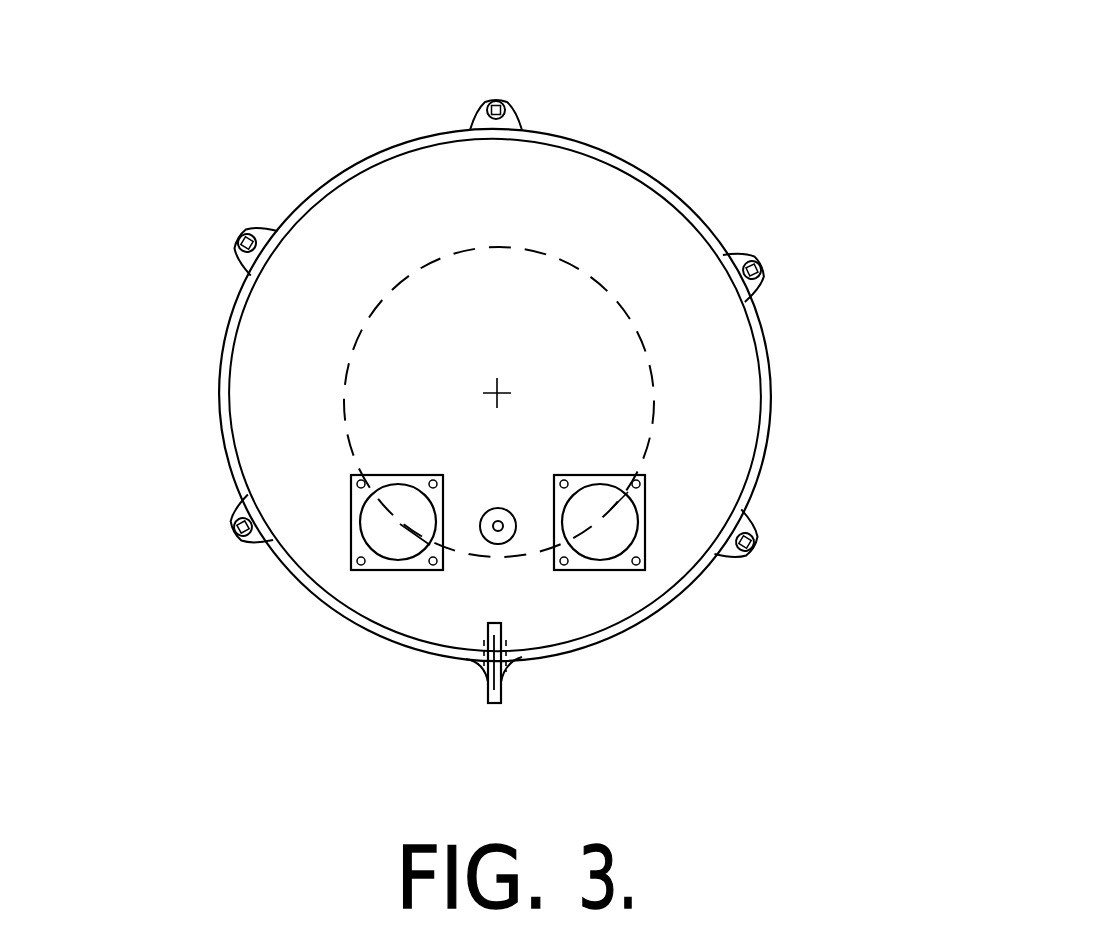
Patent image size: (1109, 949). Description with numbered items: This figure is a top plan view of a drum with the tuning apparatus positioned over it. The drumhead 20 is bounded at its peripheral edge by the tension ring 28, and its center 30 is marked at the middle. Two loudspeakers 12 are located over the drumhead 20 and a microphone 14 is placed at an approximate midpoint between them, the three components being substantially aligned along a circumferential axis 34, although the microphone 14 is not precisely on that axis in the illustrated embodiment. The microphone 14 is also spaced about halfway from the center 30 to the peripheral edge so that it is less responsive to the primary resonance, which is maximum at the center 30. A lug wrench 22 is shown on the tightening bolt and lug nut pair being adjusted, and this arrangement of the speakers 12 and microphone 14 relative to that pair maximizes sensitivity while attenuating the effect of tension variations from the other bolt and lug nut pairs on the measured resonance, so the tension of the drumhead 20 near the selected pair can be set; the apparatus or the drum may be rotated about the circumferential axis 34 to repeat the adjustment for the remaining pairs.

The loudspeakers 12 is at (400, 472).
The microphone 14 is at (500, 500).
The drumhead 20 is at (330, 245).
The lug wrench 22 is at (487, 698).
The tension ring 28 is at (770, 435).
The center 30 is at (492, 390).
The circumferential axis 34 is at (503, 247).